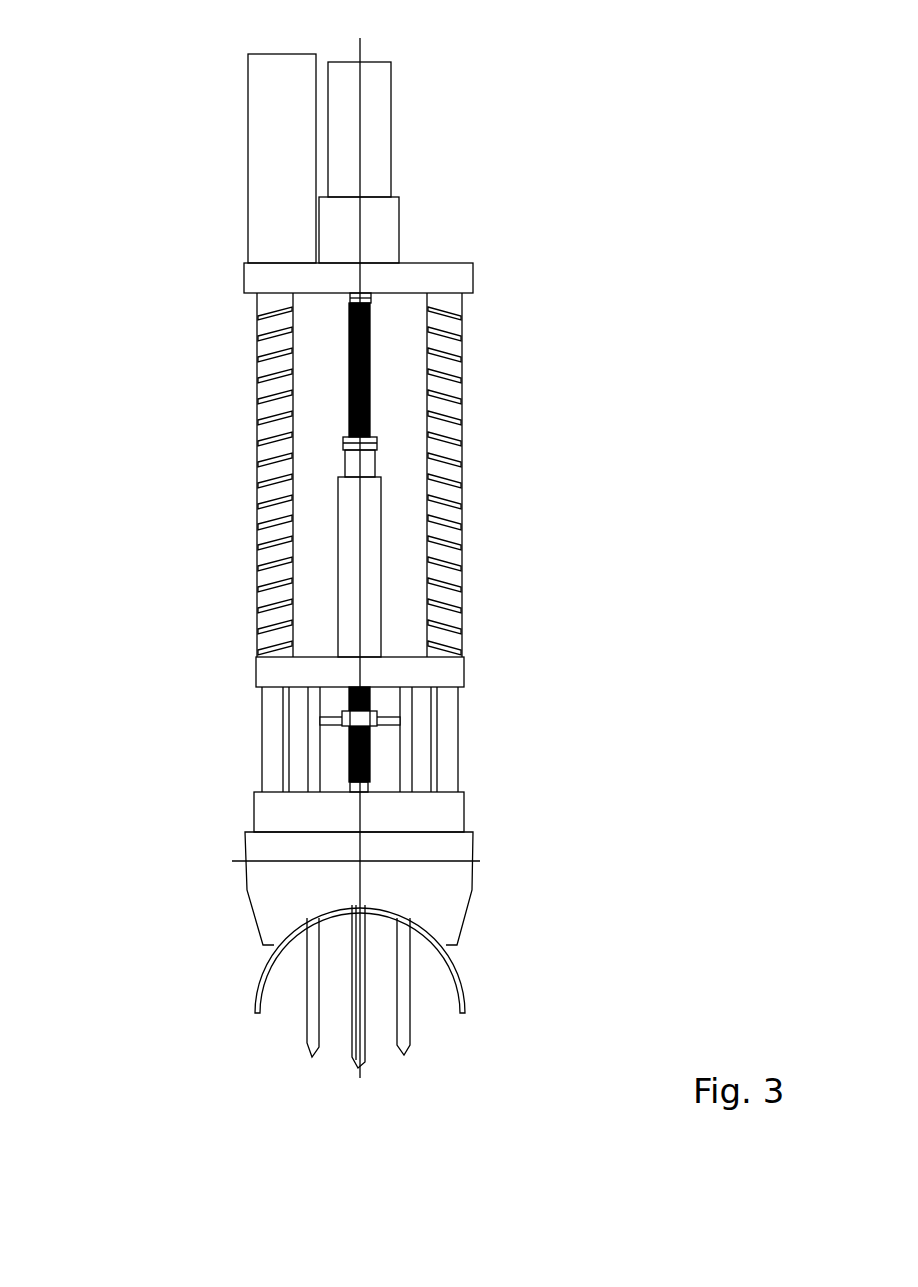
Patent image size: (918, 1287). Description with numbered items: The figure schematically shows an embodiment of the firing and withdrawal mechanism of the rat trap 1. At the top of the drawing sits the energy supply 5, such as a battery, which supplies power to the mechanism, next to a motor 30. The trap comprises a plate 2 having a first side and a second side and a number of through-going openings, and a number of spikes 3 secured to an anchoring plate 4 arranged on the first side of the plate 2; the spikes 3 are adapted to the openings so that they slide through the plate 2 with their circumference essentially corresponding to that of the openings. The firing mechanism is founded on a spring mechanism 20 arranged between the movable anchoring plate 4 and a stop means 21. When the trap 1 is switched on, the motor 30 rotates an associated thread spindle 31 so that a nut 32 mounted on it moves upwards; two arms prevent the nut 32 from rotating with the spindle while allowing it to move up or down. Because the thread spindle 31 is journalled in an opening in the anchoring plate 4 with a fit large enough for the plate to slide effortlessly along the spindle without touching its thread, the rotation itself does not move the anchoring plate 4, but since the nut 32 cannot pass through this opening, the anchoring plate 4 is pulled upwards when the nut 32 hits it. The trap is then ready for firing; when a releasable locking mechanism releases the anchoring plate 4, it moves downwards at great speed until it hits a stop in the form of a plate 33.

The rat trap 1 is at (525, 532).
The plate 2 is at (457, 959).
The spikes 3 is at (313, 1025).
The anchoring plate 4 is at (277, 666).
The energy supply 5 is at (257, 77).
The spring mechanism 20 is at (267, 402).
The stop means 21 is at (445, 275).
The motor 30 is at (390, 103).
The thread spindle 31 is at (350, 742).
The nut 32 is at (373, 713).
The plate 33 is at (455, 802).